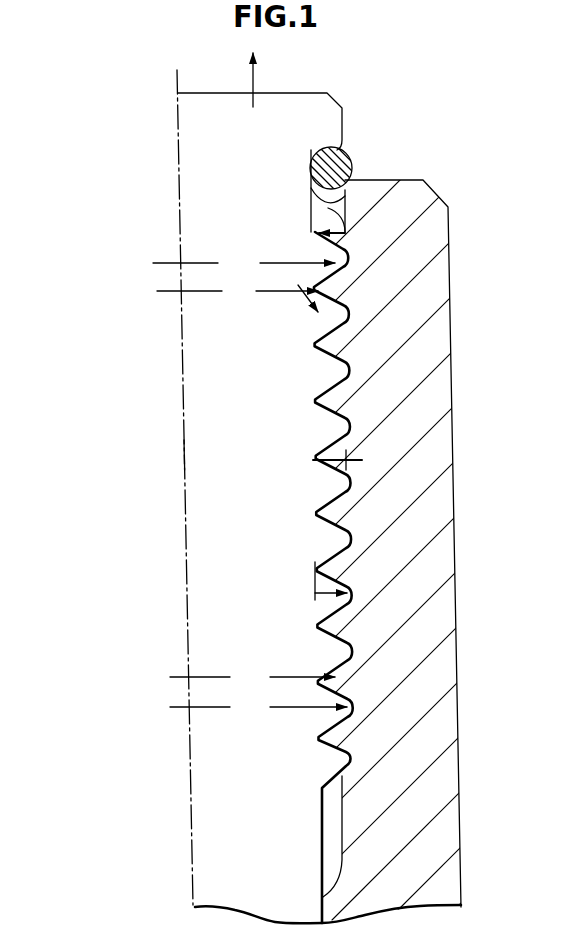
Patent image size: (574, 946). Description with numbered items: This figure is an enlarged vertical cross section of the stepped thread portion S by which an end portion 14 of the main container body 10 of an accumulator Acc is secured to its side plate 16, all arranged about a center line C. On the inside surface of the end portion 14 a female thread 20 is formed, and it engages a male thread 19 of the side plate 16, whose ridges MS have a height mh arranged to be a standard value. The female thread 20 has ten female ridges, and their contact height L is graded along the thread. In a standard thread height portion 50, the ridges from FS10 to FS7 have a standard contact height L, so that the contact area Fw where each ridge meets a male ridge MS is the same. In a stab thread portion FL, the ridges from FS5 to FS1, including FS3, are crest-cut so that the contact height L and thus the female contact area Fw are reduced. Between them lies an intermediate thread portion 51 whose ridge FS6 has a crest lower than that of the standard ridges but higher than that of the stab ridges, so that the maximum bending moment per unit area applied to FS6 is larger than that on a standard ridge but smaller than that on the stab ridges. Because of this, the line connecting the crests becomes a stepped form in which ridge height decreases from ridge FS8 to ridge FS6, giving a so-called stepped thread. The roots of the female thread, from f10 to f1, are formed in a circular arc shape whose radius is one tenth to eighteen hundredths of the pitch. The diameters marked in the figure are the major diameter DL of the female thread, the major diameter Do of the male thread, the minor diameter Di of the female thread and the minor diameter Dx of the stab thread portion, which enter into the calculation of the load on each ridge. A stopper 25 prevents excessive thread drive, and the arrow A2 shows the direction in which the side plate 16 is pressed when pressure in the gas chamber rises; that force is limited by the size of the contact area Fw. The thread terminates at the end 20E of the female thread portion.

The main container body 10 is at (461, 842).
The end portion 14 is at (457, 440).
The side plate 16 is at (345, 104).
The male thread 19 is at (184, 465).
The female thread 20 is at (455, 326).
The stopper 25 is at (352, 162).
The standard thread height portion 50 is at (300, 396).
The intermediate thread portion 51 is at (315, 445).
The end of piston body 20E is at (320, 770).
The arrow A2 is at (260, 72).
The accumulator Acc is at (143, 147).
The center line C is at (180, 228).
The major diameter of the male thread Do is at (244, 264).
The minor diameter of the female thread Di is at (237, 292).
The minor diameter of the stab thread portion Dx is at (252, 679).
The major diameter of the female thread DL is at (258, 709).
The height of the male thread ridges mh is at (315, 582).
The thread portion S is at (305, 455).
The root of the female thread f10 is at (343, 238).
The root of the female thread f1 is at (347, 760).
The contact area of the female thread Fw is at (342, 300).
The contact height L is at (322, 248).
The female ridge FS10 is at (313, 222).
The female ridge FS8 is at (315, 348).
The ridge of the male thread MS is at (340, 372).
The female ridge FS7 is at (318, 395).
The female ridge FS6 is at (318, 447).
The female ridge FS5 is at (318, 530).
The stab thread portion FL is at (320, 620).
The female ridge FS3 is at (320, 640).
The female ridge FS1 is at (320, 735).